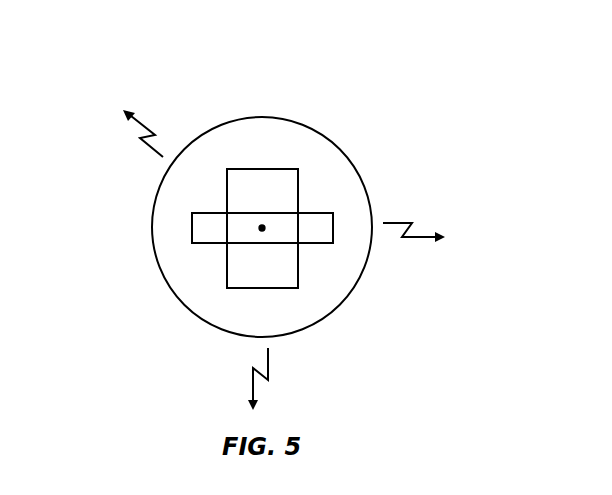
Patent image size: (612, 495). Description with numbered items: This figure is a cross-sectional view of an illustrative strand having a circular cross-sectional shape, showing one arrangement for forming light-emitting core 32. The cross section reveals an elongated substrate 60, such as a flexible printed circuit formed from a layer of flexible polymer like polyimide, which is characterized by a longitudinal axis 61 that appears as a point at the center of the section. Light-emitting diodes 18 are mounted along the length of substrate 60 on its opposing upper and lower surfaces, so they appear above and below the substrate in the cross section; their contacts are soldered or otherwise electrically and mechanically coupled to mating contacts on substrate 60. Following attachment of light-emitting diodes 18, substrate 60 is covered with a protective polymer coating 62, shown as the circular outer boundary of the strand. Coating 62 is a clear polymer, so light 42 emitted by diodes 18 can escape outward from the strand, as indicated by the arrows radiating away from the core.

The light-emitting core 32 is at (372, 77).
The light 42 is at (143, 132).
The coating 62 is at (258, 124).
The substrate 60 is at (327, 228).
The light-emitting diodes 18 is at (291, 187).
The longitudinal axis 61 is at (260, 228).